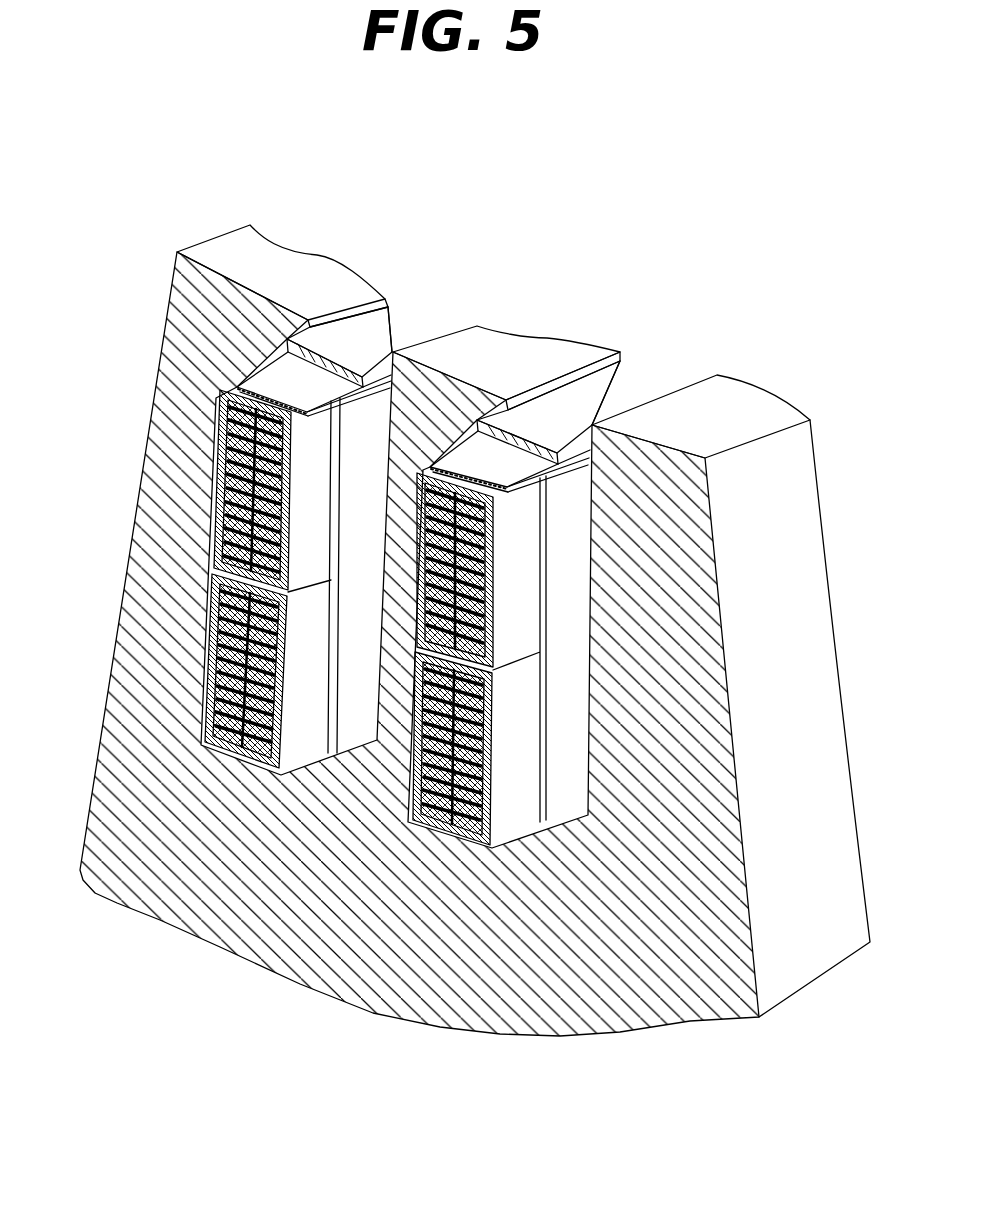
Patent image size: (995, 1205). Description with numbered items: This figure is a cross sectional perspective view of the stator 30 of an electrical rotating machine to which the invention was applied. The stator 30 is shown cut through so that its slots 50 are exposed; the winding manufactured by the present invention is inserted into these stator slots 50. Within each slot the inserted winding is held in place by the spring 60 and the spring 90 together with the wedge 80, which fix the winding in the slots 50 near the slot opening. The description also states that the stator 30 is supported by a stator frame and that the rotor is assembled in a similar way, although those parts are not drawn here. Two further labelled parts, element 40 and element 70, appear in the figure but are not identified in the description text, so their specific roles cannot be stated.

The stator 30 is at (287, 272).
The stator tooth 40 is at (527, 613).
The slots 50 is at (377, 660).
The spring 60 is at (358, 522).
The stator core 70 is at (187, 358).
The wedge 80 is at (397, 331).
The spring 90 is at (280, 380).